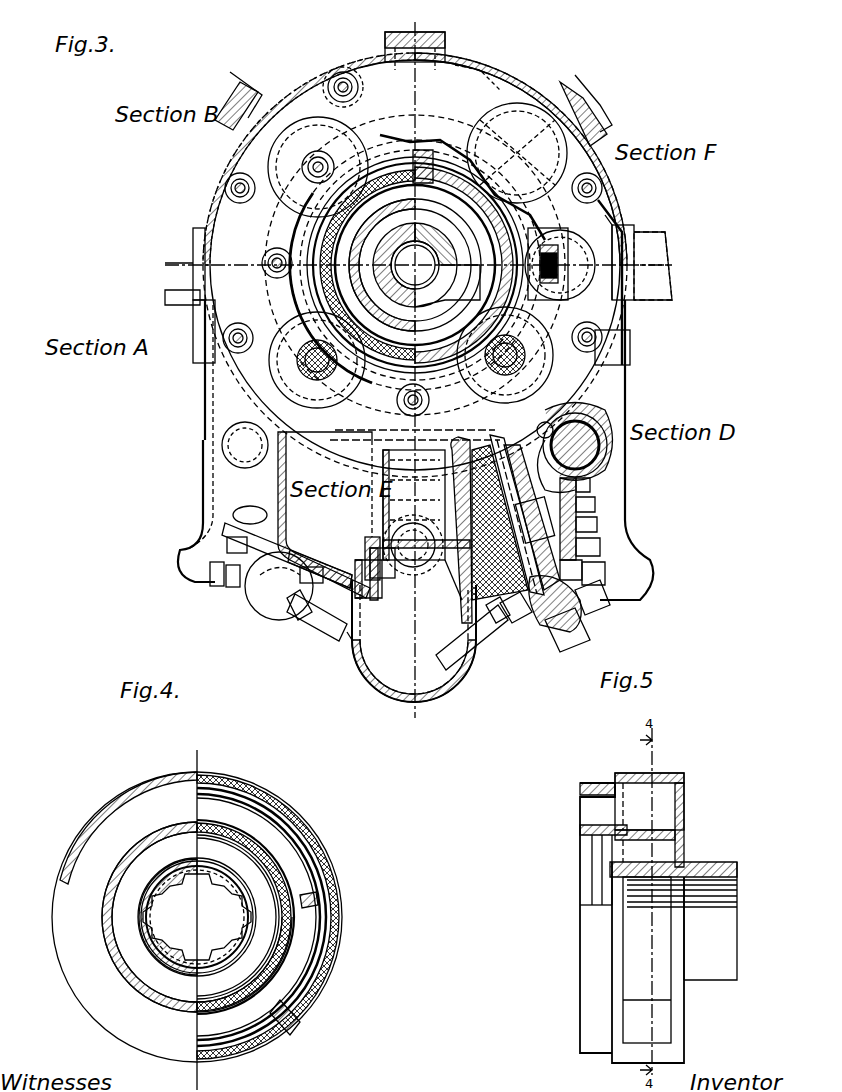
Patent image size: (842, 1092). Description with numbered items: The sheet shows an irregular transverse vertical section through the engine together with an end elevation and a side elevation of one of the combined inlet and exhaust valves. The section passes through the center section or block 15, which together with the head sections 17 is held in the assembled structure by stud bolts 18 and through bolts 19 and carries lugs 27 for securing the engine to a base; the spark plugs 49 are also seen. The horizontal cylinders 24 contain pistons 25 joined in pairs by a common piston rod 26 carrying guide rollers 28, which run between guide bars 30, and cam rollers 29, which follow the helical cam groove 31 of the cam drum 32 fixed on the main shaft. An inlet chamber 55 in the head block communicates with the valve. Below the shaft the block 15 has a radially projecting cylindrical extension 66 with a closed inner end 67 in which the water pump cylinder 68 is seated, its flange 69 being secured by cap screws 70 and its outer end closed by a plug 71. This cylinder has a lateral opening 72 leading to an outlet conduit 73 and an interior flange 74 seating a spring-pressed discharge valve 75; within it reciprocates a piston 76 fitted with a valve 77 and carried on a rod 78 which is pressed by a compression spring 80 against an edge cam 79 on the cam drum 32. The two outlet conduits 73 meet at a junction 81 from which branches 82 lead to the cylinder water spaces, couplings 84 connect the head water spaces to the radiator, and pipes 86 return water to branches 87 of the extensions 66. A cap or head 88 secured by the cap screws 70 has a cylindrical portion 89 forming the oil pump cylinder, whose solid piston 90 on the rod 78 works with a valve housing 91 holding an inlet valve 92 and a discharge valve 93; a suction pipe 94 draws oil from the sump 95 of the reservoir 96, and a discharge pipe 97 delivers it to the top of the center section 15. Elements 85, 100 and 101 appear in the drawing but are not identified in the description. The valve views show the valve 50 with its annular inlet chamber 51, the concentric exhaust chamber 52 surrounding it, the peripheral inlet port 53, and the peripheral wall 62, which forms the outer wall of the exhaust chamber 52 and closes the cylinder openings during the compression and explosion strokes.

In FIG. 3, the center section 15 is at (545, 88).
In FIG. 3, the head section 17 is at (268, 110).
In FIG. 3, the stud bolts 18 is at (224, 188).
In FIG. 3, the through bolts 19 is at (340, 75).
In FIG. 3, the cylinder 24 is at (560, 165).
In FIG. 3, the piston 25 is at (640, 259).
In FIG. 3, the piston rod 26 is at (575, 195).
In FIG. 3, the lugs 27 is at (192, 263).
In FIG. 3, the guide rollers 28 is at (500, 120).
In FIG. 3, the cam rollers 29 is at (416, 256).
In FIG. 3, the guide bars 30 is at (630, 372).
In FIG. 3, the cam groove 31 is at (432, 232).
In FIG. 3, the cam drum 32 is at (415, 265).
In FIG. 3, the spark plugs 49 is at (330, 150).
In FIG. 3, the inlet chamber 55 is at (270, 280).
In FIG. 3, the cylindrical extension 66 is at (275, 492).
In FIG. 3, the closed inner end 67 is at (415, 435).
In FIG. 3, the cylinder 68 is at (570, 502).
In FIG. 3, the flange 69 is at (414, 516).
In FIG. 3, the cap screws 70 is at (603, 544).
In FIG. 3, the cap or plug 71 is at (495, 600).
In FIG. 3, the lateral opening 72 is at (460, 600).
In FIG. 3, the outlet conduit 73 is at (445, 560).
In FIG. 3, the interior flange 74 is at (426, 529).
In FIG. 3, the discharge valve 75 is at (539, 520).
In FIG. 3, the piston 76 is at (516, 516).
In FIG. 3, the valve 77 is at (416, 505).
In FIG. 3, the rod 78 is at (510, 370).
In FIG. 3, the edge cam 79 is at (415, 265).
In FIG. 3, the compression spring 80 is at (585, 472).
In FIG. 3, the junction 81 is at (415, 600).
In FIG. 3, the branches 82 is at (375, 602).
In FIG. 3, the couplings 84 is at (388, 55).
In FIG. 3, the chamber 85 is at (329, 515).
In FIG. 3, the pipes 86 is at (222, 441).
In FIG. 3, the branches 87 is at (575, 425).
In FIG. 3, the cap or head 88 is at (240, 566).
In FIG. 3, the cylindrical portion 89 is at (615, 580).
In FIG. 3, the solid piston 90 is at (550, 645).
In FIG. 3, the valve housing 91 is at (272, 618).
In FIG. 3, the inlet valve 92 is at (515, 625).
In FIG. 3, the discharge valve 93 is at (590, 612).
In FIG. 3, the suction pipe 94 is at (320, 638).
In FIG. 3, the sump 95 is at (445, 685).
In FIG. 3, the oil reservoir 96 is at (265, 508).
In FIG. 3, the discharge pipe 97 is at (325, 82).
In FIG. 3, the lug 100 is at (572, 98).
In FIG. 3, the lug 101 is at (585, 112).
In FIG. 4, the valve 50 is at (300, 885).
In FIG. 5, the valve 50 is at (582, 943).
In FIG. 4, the inlet chamber 51 is at (270, 915).
In FIG. 5, the inlet chamber 51 is at (662, 853).
In FIG. 4, the exhaust chamber 52 is at (305, 866).
In FIG. 5, the exhaust chamber 52 is at (665, 800).
In FIG. 4, the inlet port 53 is at (335, 944).
In FIG. 4, the peripheral wall 62 is at (150, 795).
In FIG. 5, the peripheral wall 62 is at (660, 773).